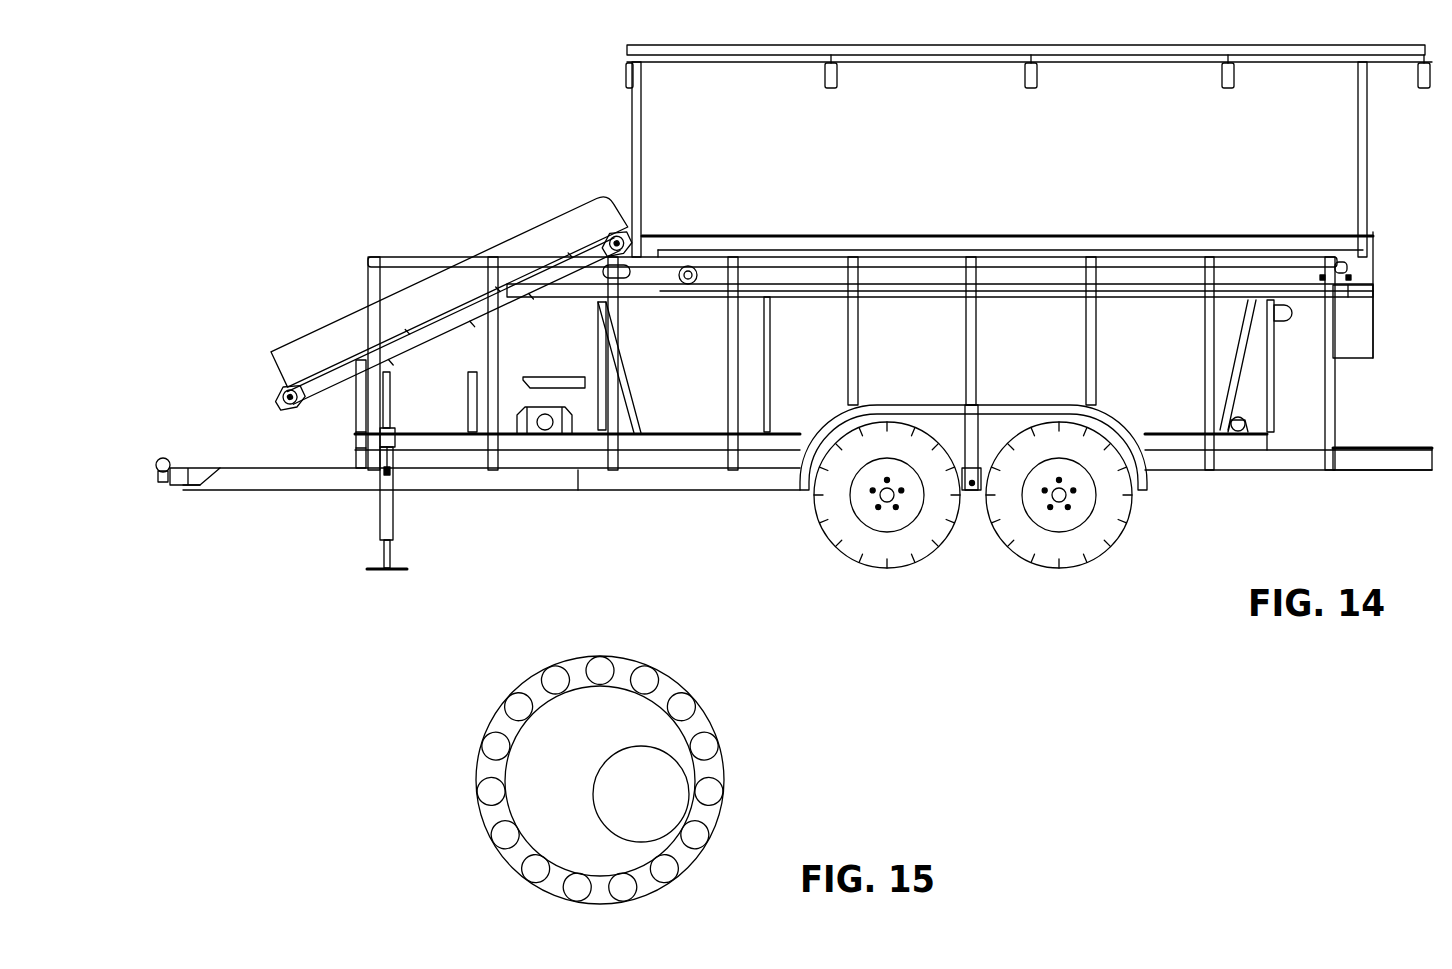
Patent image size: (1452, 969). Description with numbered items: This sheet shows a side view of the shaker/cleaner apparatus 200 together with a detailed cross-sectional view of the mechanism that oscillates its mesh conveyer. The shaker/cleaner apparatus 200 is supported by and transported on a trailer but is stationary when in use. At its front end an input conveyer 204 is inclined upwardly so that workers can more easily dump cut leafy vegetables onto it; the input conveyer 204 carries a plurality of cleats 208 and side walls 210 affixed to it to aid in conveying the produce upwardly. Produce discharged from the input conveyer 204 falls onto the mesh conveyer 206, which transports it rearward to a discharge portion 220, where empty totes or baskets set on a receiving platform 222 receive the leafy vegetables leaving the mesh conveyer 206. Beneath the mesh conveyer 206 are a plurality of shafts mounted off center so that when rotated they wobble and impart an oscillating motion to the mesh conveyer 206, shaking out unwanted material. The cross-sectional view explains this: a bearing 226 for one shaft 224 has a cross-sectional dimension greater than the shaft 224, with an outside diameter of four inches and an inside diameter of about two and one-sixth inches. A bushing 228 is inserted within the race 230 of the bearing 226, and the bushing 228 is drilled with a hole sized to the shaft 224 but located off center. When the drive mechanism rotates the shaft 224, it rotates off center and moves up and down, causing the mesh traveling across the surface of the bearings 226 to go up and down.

In FIG. 14, the shaker/cleaner apparatus 200 is at (510, 128).
In FIG. 14, the input conveyer 204 is at (338, 387).
In FIG. 14, the mesh conveyer 206 is at (765, 233).
In FIG. 14, the cleats 208 is at (445, 333).
In FIG. 14, the side walls 210 is at (313, 333).
In FIG. 14, the discharge portion 220 is at (1373, 317).
In FIG. 14, the receiving platform 222 is at (1408, 445).
In FIG. 15, the shaft 224 is at (670, 762).
In FIG. 15, the bearing 226 is at (493, 847).
In FIG. 15, the bushing 228 is at (580, 705).
In FIG. 15, the race 230 is at (686, 676).